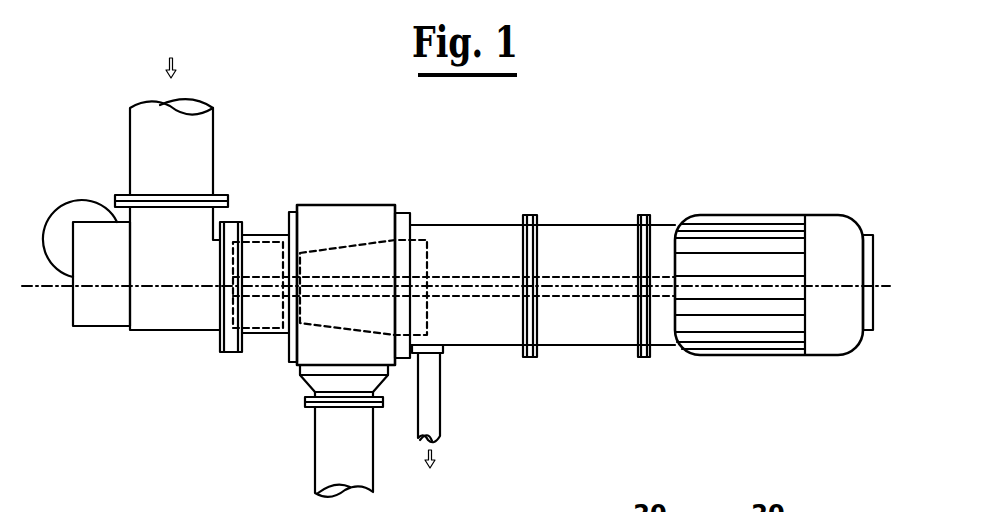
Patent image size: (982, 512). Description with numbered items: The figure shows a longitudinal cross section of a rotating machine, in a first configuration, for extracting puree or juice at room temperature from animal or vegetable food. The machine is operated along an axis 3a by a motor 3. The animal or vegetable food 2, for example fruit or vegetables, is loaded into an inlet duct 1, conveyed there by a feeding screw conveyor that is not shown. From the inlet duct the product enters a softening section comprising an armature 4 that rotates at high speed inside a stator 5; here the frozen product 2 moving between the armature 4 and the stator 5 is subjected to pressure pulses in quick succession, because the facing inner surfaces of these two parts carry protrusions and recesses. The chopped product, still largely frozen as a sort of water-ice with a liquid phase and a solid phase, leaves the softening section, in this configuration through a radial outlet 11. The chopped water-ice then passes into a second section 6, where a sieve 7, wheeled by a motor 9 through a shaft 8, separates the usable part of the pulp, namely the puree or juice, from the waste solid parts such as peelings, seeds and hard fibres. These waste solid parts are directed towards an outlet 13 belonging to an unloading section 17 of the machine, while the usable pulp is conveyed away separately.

The inlet duct 1 is at (160, 303).
The animal or vegetable food 2 is at (171, 115).
The motor 3 is at (77, 212).
The axis 3a is at (47, 290).
The armature 4 is at (253, 333).
The stator 5 is at (257, 242).
The second section 6 is at (375, 207).
The sieve 7 is at (335, 253).
The shaft 8 is at (455, 278).
The motor 9 is at (762, 222).
The radial outlet 11 is at (323, 437).
The outlet 13 is at (430, 393).
The unloading section 17 is at (577, 237).